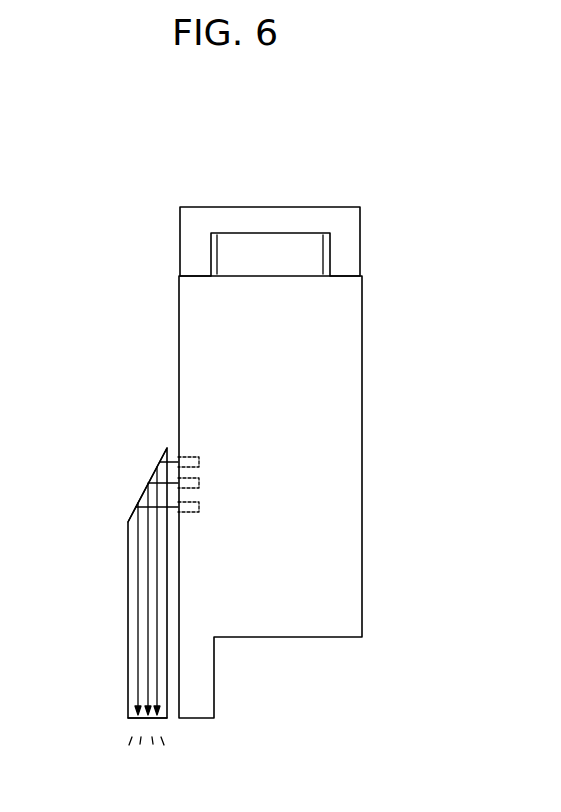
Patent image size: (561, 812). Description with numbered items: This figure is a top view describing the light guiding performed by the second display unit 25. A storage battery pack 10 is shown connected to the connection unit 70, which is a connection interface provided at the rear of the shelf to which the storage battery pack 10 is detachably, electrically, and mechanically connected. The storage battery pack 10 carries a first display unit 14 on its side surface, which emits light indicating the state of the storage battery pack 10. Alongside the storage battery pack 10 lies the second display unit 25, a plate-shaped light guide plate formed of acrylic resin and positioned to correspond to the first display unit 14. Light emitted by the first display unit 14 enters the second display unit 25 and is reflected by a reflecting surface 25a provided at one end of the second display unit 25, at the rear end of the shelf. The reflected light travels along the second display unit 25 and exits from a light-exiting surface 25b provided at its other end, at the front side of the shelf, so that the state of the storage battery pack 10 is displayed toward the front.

The connection unit 70 is at (237, 207).
The storage battery pack 10 is at (277, 623).
The first display unit 14 is at (170, 433).
The second display unit 25 is at (127, 580).
The reflecting surface 25a is at (142, 493).
The light-exiting surface 25b is at (132, 722).